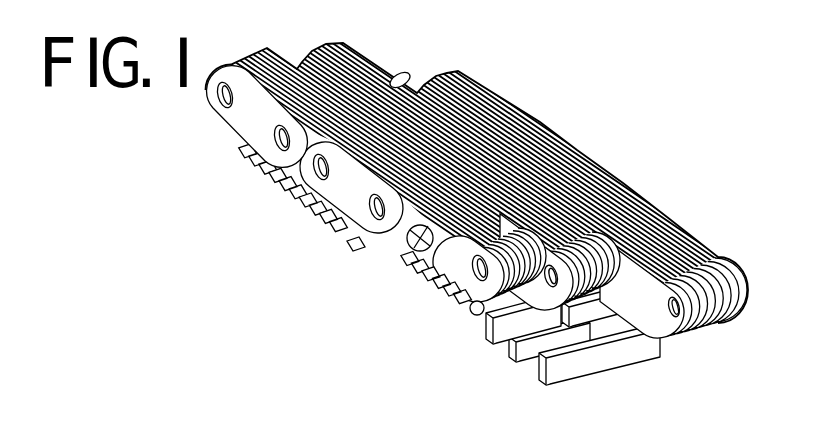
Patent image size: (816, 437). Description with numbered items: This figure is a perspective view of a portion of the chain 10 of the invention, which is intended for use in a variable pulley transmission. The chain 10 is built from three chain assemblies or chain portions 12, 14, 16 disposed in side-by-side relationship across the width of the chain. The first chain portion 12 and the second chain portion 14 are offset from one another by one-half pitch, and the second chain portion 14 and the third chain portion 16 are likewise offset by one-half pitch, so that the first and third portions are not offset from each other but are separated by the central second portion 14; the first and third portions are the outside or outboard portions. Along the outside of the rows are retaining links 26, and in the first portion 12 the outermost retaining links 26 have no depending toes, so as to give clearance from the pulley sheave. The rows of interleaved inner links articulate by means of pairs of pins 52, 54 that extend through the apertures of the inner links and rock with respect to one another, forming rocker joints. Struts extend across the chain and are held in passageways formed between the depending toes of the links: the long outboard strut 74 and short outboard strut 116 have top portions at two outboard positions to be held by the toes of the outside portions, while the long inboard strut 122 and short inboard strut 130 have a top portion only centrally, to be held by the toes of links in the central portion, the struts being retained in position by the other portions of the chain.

The chain 10 is at (560, 104).
The first chain portion 12 is at (231, 46).
The second chain portion 14 is at (298, 46).
The third chain portion 16 is at (414, 57).
The retaining link 26 is at (242, 118).
The long outboard strut 74 is at (256, 158).
The long inboard strut 122 is at (284, 181).
The short outboard strut 116 is at (302, 196).
The short inboard strut 130 is at (327, 226).
The pin 52 is at (407, 240).
The pin 54 is at (420, 286).